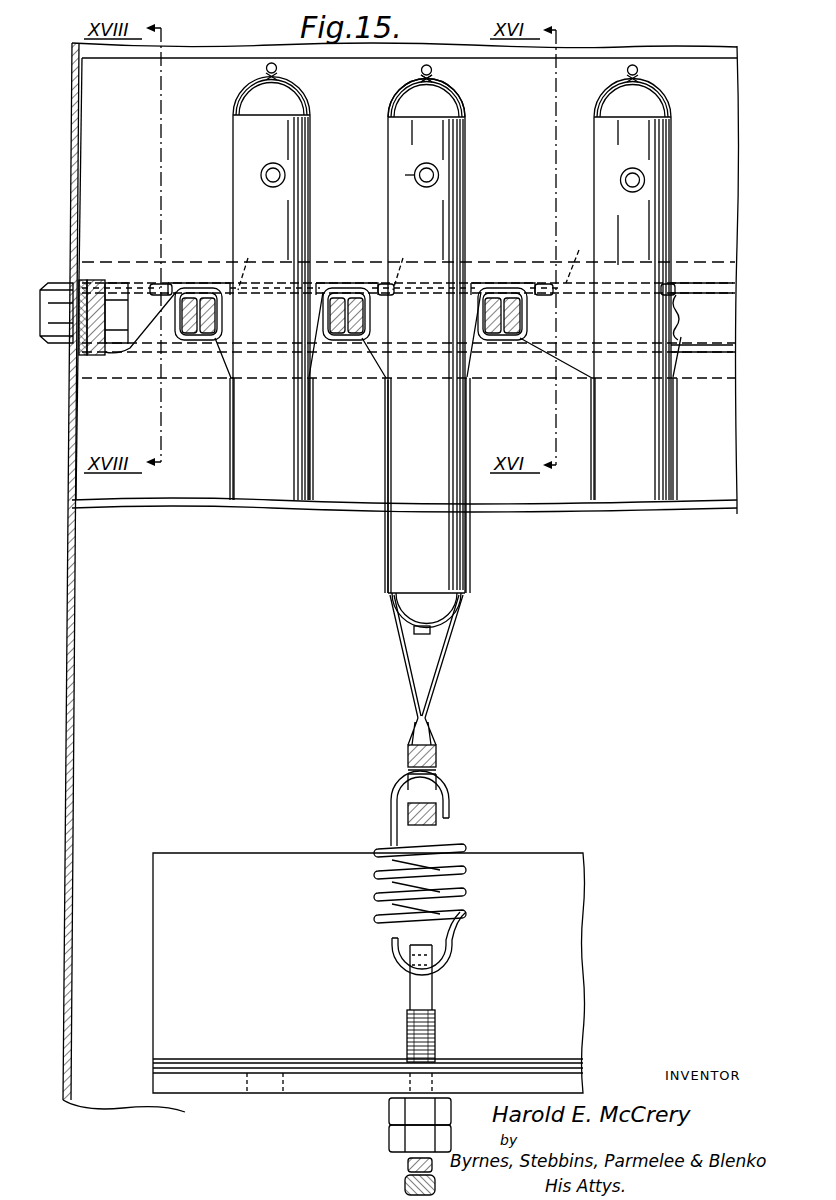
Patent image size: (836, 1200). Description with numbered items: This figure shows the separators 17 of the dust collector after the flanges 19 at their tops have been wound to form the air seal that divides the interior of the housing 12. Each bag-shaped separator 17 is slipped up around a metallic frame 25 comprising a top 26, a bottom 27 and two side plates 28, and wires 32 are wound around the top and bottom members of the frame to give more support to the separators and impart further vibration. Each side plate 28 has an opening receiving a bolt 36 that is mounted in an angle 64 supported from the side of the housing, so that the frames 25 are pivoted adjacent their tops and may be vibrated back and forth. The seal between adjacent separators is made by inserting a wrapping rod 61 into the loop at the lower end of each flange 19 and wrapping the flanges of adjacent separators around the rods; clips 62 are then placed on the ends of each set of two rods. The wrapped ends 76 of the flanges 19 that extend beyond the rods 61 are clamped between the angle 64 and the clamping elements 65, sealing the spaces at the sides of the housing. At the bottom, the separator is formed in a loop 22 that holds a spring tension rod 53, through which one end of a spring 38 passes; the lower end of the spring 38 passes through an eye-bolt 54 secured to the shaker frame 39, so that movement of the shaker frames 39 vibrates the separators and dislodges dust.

The housing 12 is at (70, 403).
The separators 17 is at (685, 428).
The flanges 19 is at (480, 355).
The loop 22 is at (404, 741).
The frames 25 is at (405, 215).
The top 26 is at (408, 97).
The bottom 27 is at (392, 600).
The side plates 28 is at (452, 175).
The wires 32 is at (445, 92).
The bolt 36 is at (285, 175).
The springs 38 is at (445, 890).
The shaker frames 39 is at (565, 1007).
The spring tension rod 53 is at (438, 757).
The eye-bolt 54 is at (412, 1028).
The wrapping rod 61 is at (205, 286).
The clips 62 is at (345, 286).
The angle 64 is at (730, 137).
The clamping elements 65 is at (148, 348).
The wrapped ends 76 is at (411, 259).